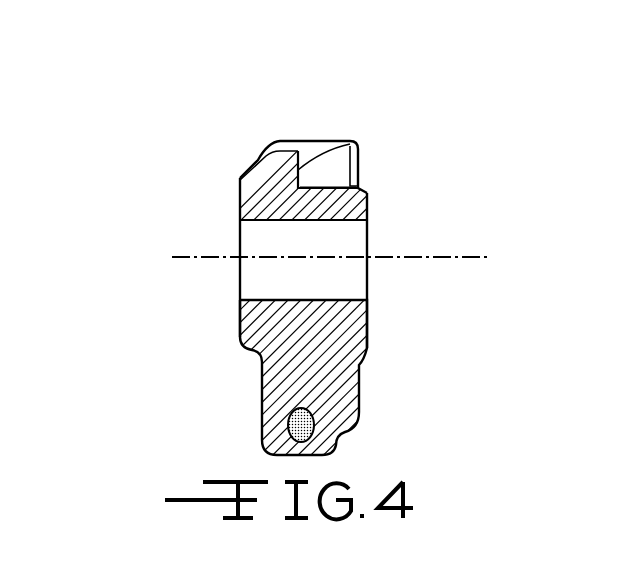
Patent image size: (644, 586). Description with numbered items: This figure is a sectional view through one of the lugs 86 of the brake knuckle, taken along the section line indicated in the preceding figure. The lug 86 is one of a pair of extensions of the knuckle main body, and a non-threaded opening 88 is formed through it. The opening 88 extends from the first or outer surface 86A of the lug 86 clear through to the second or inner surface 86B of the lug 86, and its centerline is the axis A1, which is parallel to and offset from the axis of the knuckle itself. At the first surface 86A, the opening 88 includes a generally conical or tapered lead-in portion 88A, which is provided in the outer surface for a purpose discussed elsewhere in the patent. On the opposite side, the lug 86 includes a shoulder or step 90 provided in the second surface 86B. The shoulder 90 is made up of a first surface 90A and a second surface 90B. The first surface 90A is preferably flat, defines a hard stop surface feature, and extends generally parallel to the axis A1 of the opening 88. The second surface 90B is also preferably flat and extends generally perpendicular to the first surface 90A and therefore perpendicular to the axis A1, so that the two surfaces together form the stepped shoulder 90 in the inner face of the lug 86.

The lug 86 is at (281, 141).
The first surface 86A is at (238, 188).
The second surface 86B is at (368, 197).
The opening 88 is at (307, 300).
The lead-in portion 88A is at (240, 313).
The shoulder 90 is at (330, 192).
The first surface 90A is at (358, 150).
The second surface 90B is at (330, 186).
The axis A1 is at (425, 257).